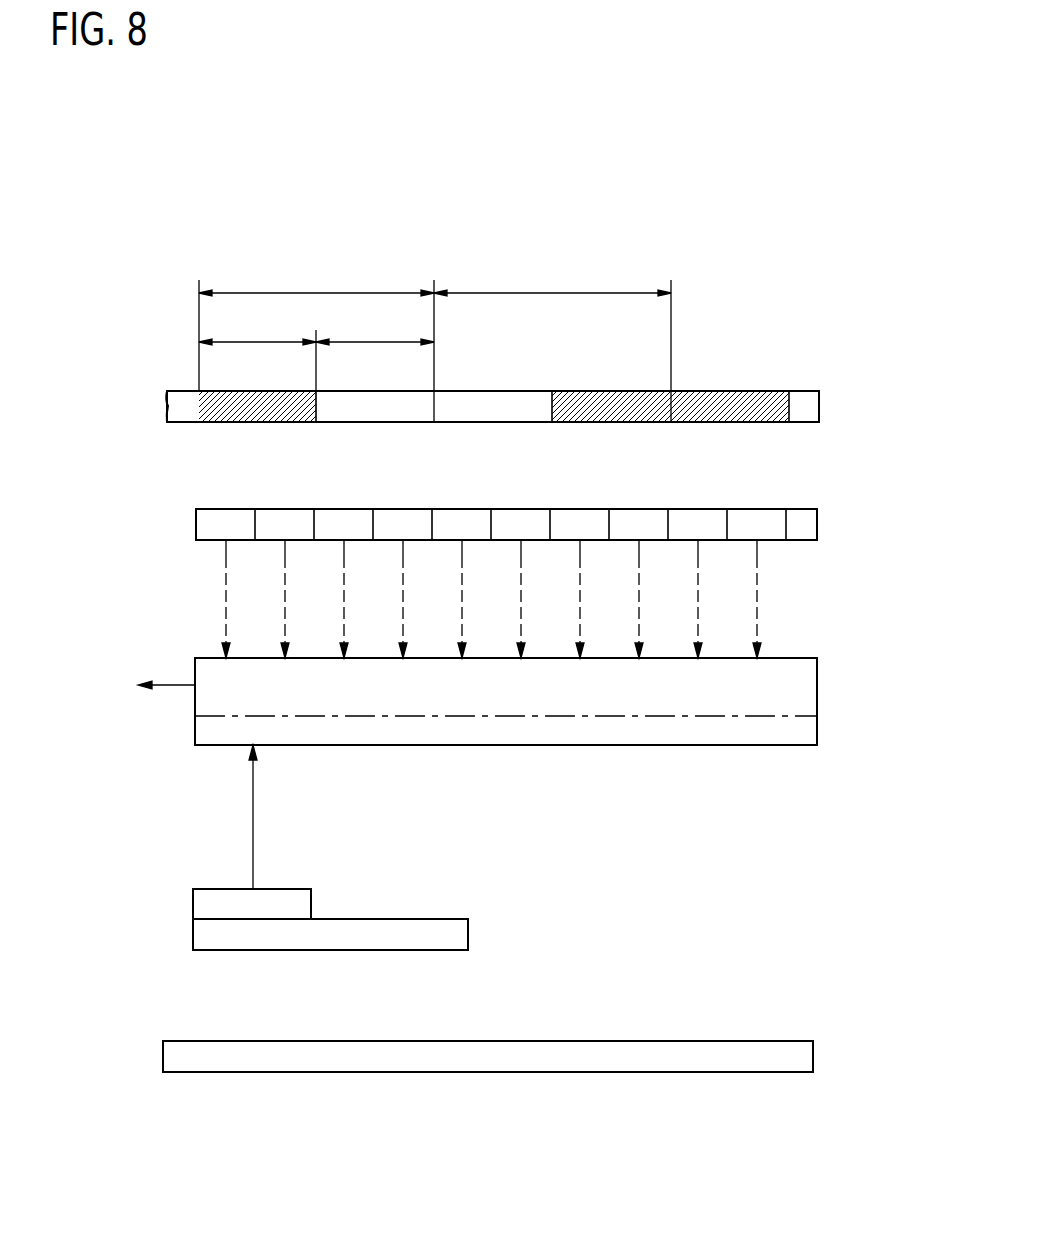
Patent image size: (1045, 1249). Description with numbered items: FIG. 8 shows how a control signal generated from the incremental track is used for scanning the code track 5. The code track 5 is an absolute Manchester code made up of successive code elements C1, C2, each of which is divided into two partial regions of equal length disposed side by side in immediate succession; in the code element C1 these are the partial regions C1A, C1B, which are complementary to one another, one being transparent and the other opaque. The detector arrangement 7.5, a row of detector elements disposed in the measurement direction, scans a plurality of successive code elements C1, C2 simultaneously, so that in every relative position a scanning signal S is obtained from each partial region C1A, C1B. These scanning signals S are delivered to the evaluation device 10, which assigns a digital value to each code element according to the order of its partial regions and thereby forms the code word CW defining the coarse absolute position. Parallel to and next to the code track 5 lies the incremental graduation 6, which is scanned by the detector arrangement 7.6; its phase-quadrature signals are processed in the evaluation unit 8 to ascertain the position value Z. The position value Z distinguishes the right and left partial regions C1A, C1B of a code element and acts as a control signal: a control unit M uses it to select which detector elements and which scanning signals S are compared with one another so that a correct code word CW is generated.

The code track 5 is at (803, 411).
The detector arrangement 7.5 is at (797, 530).
The scanning signal S is at (759, 588).
The evaluation device 10 is at (798, 710).
The control unit M is at (212, 730).
The code word CW is at (128, 682).
The position value Z is at (253, 855).
The evaluation unit 8 is at (293, 905).
The detector arrangement 7.6 is at (452, 935).
The incremental graduation 6 is at (797, 1062).
The code element C1 is at (316, 339).
The code element C2 is at (552, 339).
The partial region C1A is at (257, 349).
The partial region C1B is at (375, 326).